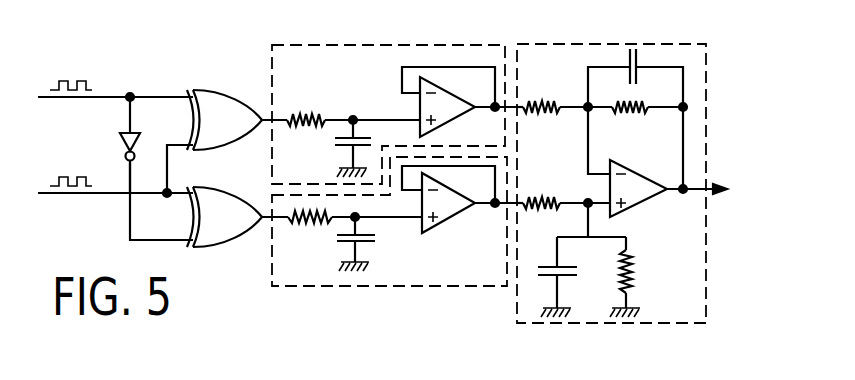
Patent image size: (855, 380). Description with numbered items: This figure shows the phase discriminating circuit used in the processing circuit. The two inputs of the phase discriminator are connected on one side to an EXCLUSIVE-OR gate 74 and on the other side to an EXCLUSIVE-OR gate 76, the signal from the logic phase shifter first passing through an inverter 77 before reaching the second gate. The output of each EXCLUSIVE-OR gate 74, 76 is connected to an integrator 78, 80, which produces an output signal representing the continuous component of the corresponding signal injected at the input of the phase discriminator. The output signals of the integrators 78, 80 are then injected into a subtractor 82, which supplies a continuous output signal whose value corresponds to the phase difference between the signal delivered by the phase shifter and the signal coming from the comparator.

The EXCLUSIVE-OR gate 74 is at (206, 94).
The EXCLUSIVE-OR gate 76 is at (224, 218).
The inverter 77 is at (122, 143).
The integrator 78 is at (325, 45).
The integrator 80 is at (340, 286).
The subtractor 82 is at (517, 318).